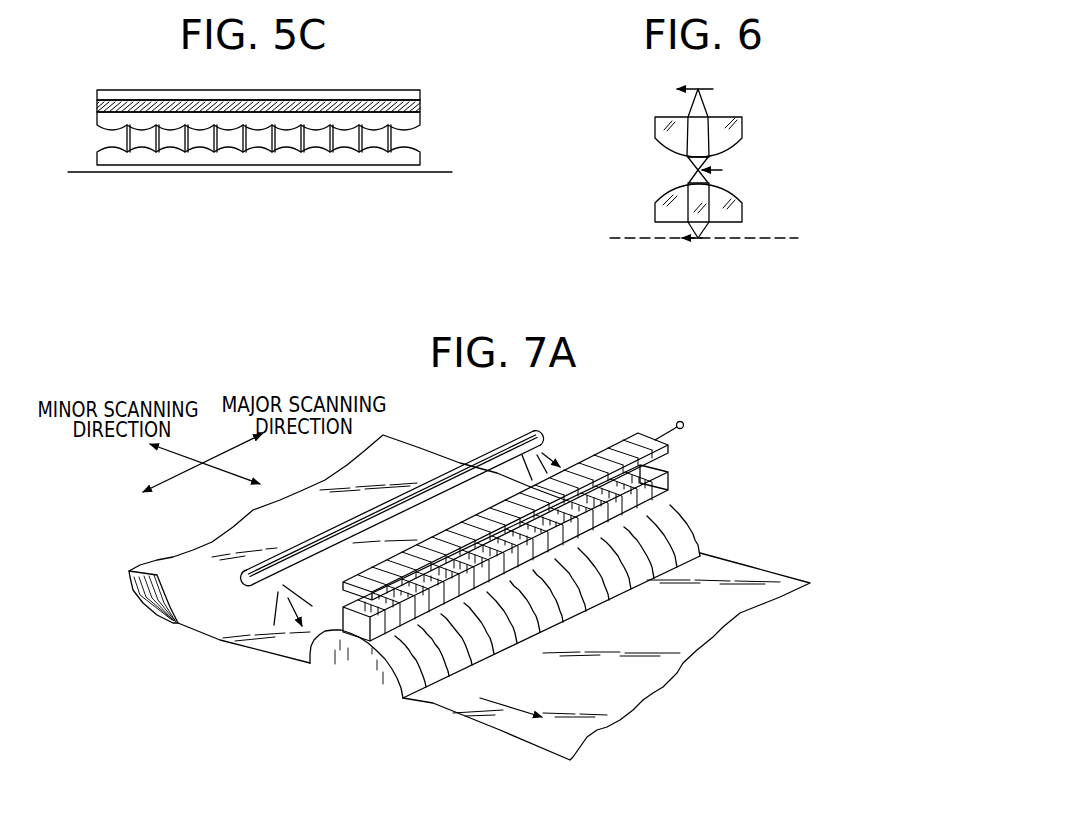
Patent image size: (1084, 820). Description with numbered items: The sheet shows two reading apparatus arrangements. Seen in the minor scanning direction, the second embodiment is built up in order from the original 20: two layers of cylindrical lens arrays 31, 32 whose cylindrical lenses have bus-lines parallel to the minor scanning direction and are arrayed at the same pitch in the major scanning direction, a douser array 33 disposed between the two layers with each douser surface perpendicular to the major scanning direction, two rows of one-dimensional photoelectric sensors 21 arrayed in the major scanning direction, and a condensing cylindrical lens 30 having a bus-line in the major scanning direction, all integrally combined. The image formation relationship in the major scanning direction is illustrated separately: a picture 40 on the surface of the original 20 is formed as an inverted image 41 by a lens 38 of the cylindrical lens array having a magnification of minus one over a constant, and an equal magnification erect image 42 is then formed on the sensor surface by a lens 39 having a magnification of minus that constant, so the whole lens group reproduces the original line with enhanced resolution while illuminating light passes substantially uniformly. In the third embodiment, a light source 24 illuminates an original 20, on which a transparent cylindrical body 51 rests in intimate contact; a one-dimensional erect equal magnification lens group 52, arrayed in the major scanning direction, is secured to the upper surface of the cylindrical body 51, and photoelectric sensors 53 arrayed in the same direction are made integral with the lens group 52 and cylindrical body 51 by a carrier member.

In FIG. 5C, the original 20 is at (435, 173).
In FIG. 6, the original 20 is at (628, 240).
In FIG. 7A, the original 20 is at (408, 455).
In FIG. 5C, the one-dimensional photoelectric sensors 21 is at (420, 108).
In FIG. 7A, the light source 24 is at (508, 444).
In FIG. 5C, the condensing cylindrical lens 30 is at (420, 97).
In FIG. 5C, the cylindrical lens array 31 is at (420, 158).
In FIG. 5C, the cylindrical lens array 32 is at (420, 123).
In FIG. 5C, the douser array 33 is at (124, 135).
In FIG. 6, the lens of the cylindrical lens array 38 is at (737, 210).
In FIG. 6, the lens of the cylindrical lens array 39 is at (740, 127).
In FIG. 6, the picture 40 is at (708, 240).
In FIG. 6, the inverted image 41 is at (697, 170).
In FIG. 6, the equal magnification erect image 42 is at (703, 89).
In FIG. 7A, the transparent cylindrical body 51 is at (688, 518).
In FIG. 7A, the erect equal magnification lens group 52 is at (667, 479).
In FIG. 7A, the photoelectric sensors 53 is at (640, 432).